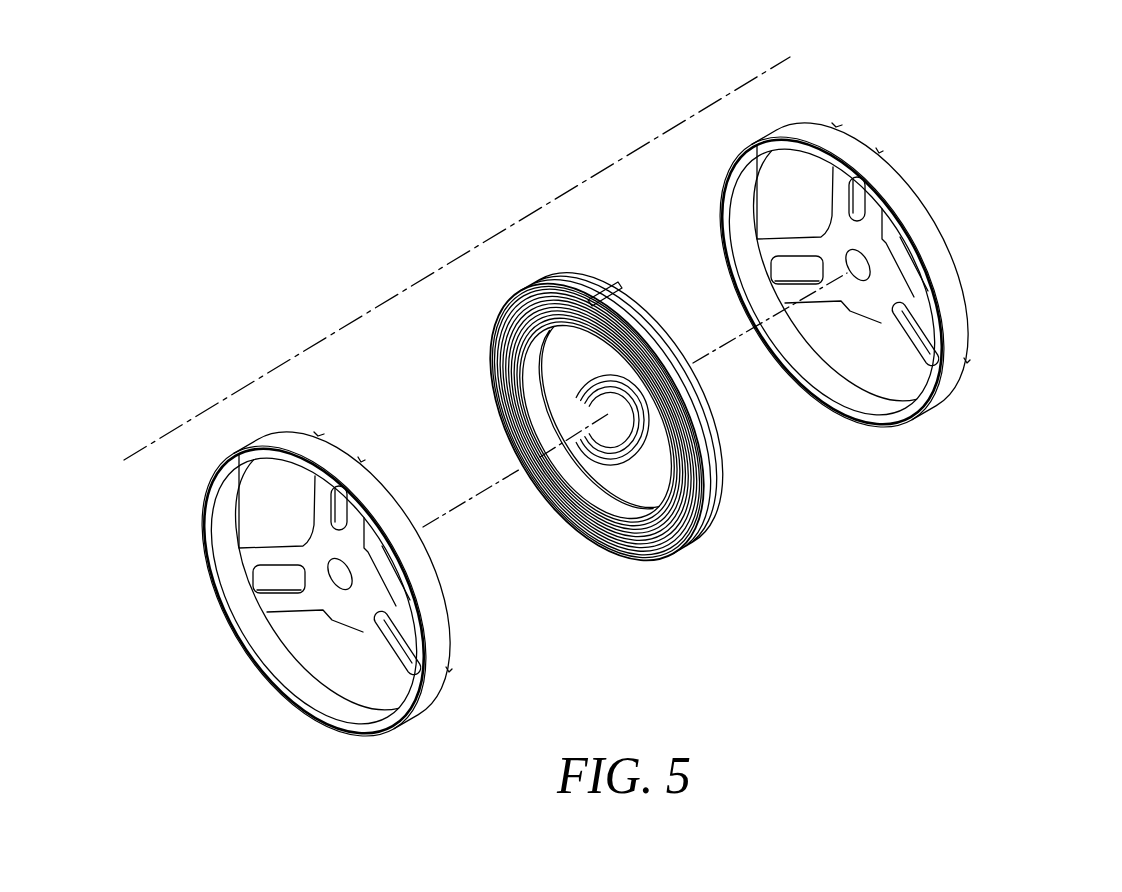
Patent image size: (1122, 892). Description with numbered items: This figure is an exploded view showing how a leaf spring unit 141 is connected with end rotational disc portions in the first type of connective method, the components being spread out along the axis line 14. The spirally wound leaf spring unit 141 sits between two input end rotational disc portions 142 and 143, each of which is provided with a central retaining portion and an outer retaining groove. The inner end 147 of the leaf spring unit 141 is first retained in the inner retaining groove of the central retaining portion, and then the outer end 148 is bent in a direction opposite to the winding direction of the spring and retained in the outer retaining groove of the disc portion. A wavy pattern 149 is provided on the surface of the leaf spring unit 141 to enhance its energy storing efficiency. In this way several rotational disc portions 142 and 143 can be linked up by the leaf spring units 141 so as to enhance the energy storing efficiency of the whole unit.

The spring unit axis 14 is at (472, 244).
The leaf spring unit 141 is at (606, 399).
The input end rotational disc portion 142 is at (871, 275).
The input end rotational disc portion 143 is at (354, 584).
The inner end 147 is at (500, 436).
The outer end 148 is at (603, 287).
The wavy pattern 149 is at (713, 432).